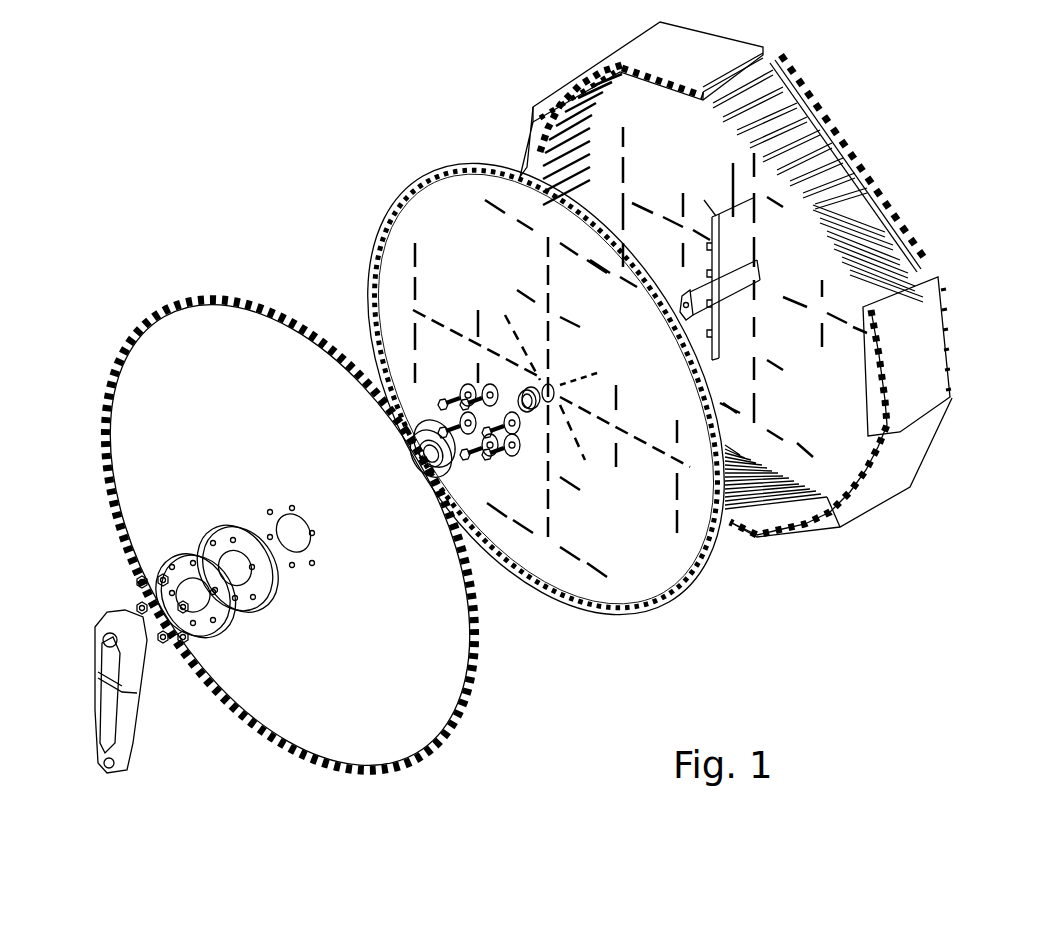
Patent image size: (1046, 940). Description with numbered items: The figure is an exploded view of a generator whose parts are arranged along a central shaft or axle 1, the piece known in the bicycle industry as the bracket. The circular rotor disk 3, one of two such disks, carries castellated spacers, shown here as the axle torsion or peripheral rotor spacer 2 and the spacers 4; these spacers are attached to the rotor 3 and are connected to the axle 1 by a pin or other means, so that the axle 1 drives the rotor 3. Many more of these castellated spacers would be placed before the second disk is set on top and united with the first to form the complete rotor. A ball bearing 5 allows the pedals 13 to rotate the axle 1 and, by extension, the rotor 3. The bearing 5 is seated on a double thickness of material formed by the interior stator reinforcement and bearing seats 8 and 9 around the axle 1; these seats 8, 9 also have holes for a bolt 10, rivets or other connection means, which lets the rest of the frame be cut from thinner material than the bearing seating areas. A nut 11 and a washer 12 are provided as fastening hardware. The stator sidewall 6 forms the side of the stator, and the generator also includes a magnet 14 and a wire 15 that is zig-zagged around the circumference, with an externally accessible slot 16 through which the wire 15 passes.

The axle 1 is at (722, 290).
The castellated spacer 2 is at (733, 250).
The rotor 3 is at (640, 543).
The spacer 4 is at (518, 383).
The ball bearing 5 is at (443, 467).
The stator sidewall 6 is at (410, 710).
The interior stator reinforcement and bearing seat 8 is at (260, 587).
The interior stator reinforcement and bearing seat 9 is at (207, 625).
The bolt 10 is at (490, 453).
The nut 11 is at (137, 607).
The washer 12 is at (160, 580).
The pedal 13 is at (110, 710).
The magnet 14 is at (892, 203).
The wire zig-zagged around the circumference 15 is at (838, 140).
The externally accessible slot for wire 16 is at (733, 190).